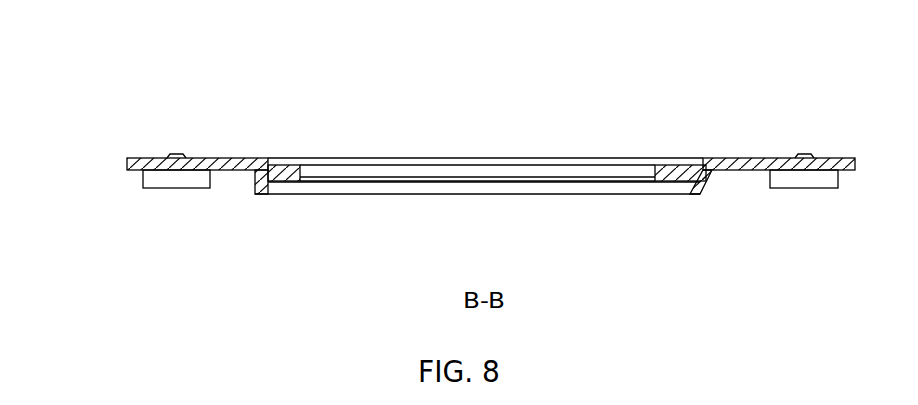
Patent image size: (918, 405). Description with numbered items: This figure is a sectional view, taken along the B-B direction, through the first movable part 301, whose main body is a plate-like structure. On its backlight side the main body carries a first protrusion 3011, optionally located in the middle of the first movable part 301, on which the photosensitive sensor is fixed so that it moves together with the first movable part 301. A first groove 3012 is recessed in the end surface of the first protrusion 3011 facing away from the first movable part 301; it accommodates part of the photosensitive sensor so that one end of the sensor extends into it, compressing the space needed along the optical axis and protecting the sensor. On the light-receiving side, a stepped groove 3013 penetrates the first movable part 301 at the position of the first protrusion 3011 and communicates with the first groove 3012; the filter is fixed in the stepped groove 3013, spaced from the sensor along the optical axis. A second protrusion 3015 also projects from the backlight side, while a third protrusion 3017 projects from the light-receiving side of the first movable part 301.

The first movable part 301 is at (236, 158).
The first protrusion 3011 is at (262, 188).
The first groove 3012 is at (416, 192).
The stepped groove 3013 is at (378, 168).
The second protrusion 3015 is at (167, 178).
The third protrusion 3017 is at (168, 156).